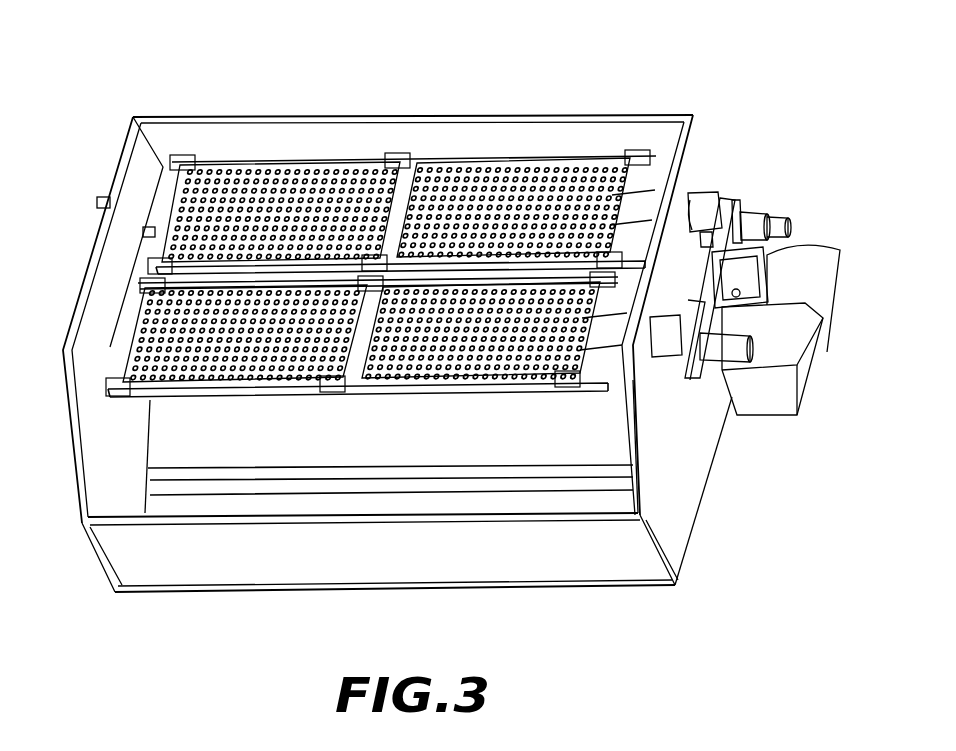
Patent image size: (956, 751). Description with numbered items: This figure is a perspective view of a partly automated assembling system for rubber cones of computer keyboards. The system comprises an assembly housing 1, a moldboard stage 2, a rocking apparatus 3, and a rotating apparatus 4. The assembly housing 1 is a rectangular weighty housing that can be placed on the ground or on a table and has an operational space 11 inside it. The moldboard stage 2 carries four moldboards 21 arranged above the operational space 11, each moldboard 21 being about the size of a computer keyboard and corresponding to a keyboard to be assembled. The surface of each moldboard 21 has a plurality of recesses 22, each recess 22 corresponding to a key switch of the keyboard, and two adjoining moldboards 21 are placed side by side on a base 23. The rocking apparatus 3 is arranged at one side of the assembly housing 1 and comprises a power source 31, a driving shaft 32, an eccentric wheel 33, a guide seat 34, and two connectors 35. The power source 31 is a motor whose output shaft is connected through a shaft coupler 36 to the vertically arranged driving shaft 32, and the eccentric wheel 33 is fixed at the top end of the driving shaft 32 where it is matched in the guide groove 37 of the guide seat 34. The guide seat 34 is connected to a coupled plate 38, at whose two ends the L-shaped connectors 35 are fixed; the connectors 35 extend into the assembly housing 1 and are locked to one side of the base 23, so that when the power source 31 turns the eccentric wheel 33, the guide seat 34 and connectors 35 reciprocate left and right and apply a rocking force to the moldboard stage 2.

The assembly housing 1 is at (696, 113).
The moldboard stage 2 is at (478, 143).
The rocking apparatus 3 is at (817, 215).
The rotating apparatus 4 is at (86, 240).
The operational space 11 is at (545, 447).
The moldboard 21 is at (326, 162).
The recess 22 is at (231, 170).
The base 23 is at (660, 154).
The power source 31 is at (817, 273).
The driving shaft 32 is at (736, 289).
The eccentric wheel 33 is at (733, 297).
The guide seat 34 is at (780, 226).
The connector 35 is at (707, 203).
The shaft coupler 36 is at (782, 350).
The guide groove 37 is at (760, 205).
The coupled plate 38 is at (700, 398).